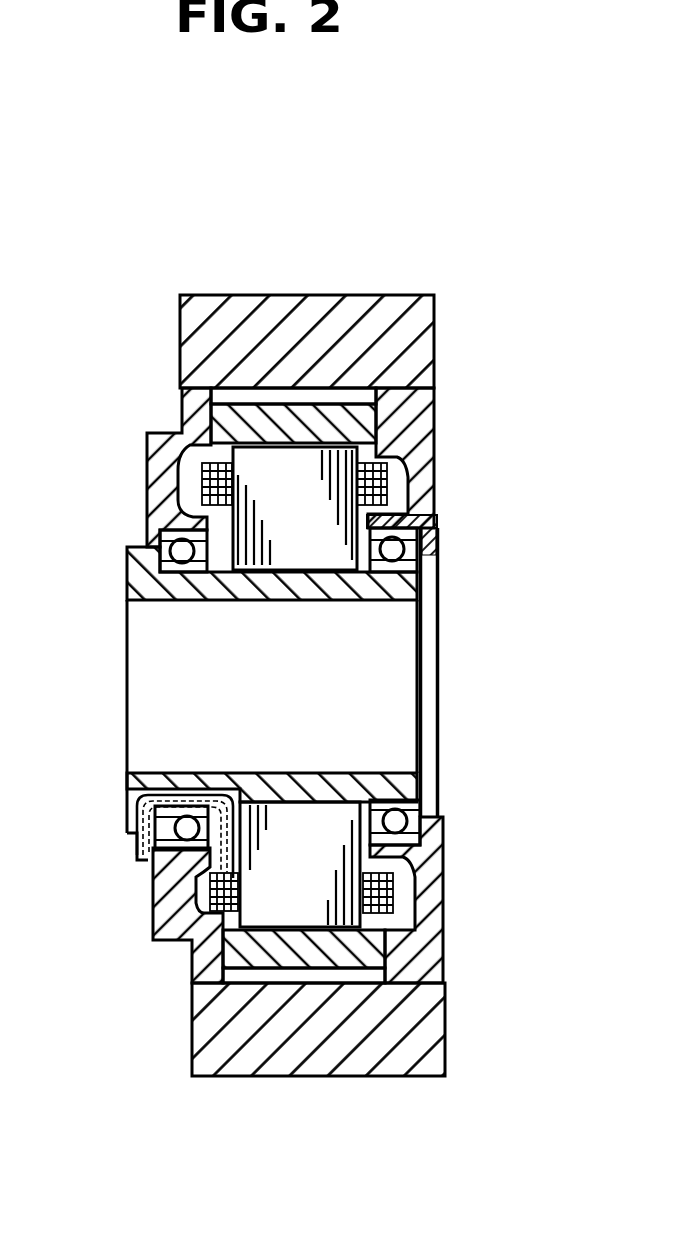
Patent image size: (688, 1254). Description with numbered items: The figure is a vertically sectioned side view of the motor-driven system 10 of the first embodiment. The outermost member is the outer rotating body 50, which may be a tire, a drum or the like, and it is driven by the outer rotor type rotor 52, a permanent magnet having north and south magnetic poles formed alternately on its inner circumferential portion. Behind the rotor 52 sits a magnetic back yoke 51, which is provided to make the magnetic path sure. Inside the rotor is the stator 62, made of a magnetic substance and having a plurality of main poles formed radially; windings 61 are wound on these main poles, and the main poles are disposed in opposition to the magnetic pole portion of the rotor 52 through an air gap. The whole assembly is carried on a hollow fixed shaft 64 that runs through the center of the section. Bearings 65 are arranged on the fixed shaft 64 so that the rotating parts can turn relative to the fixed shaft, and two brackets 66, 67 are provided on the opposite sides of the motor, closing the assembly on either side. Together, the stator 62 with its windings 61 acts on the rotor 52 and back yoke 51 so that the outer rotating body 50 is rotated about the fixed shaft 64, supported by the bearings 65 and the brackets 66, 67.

The motor-driven system 10 is at (243, 270).
The outer rotating body 50 is at (356, 330).
The magnetic back yoke 51 is at (353, 978).
The outer rotor type rotor 52 is at (297, 962).
The windings 61 is at (393, 890).
The stator 62 is at (283, 907).
The fixed shaft 64 is at (375, 600).
The bearings 65 is at (152, 520).
The bracket 66 is at (150, 455).
The bracket 67 is at (437, 435).